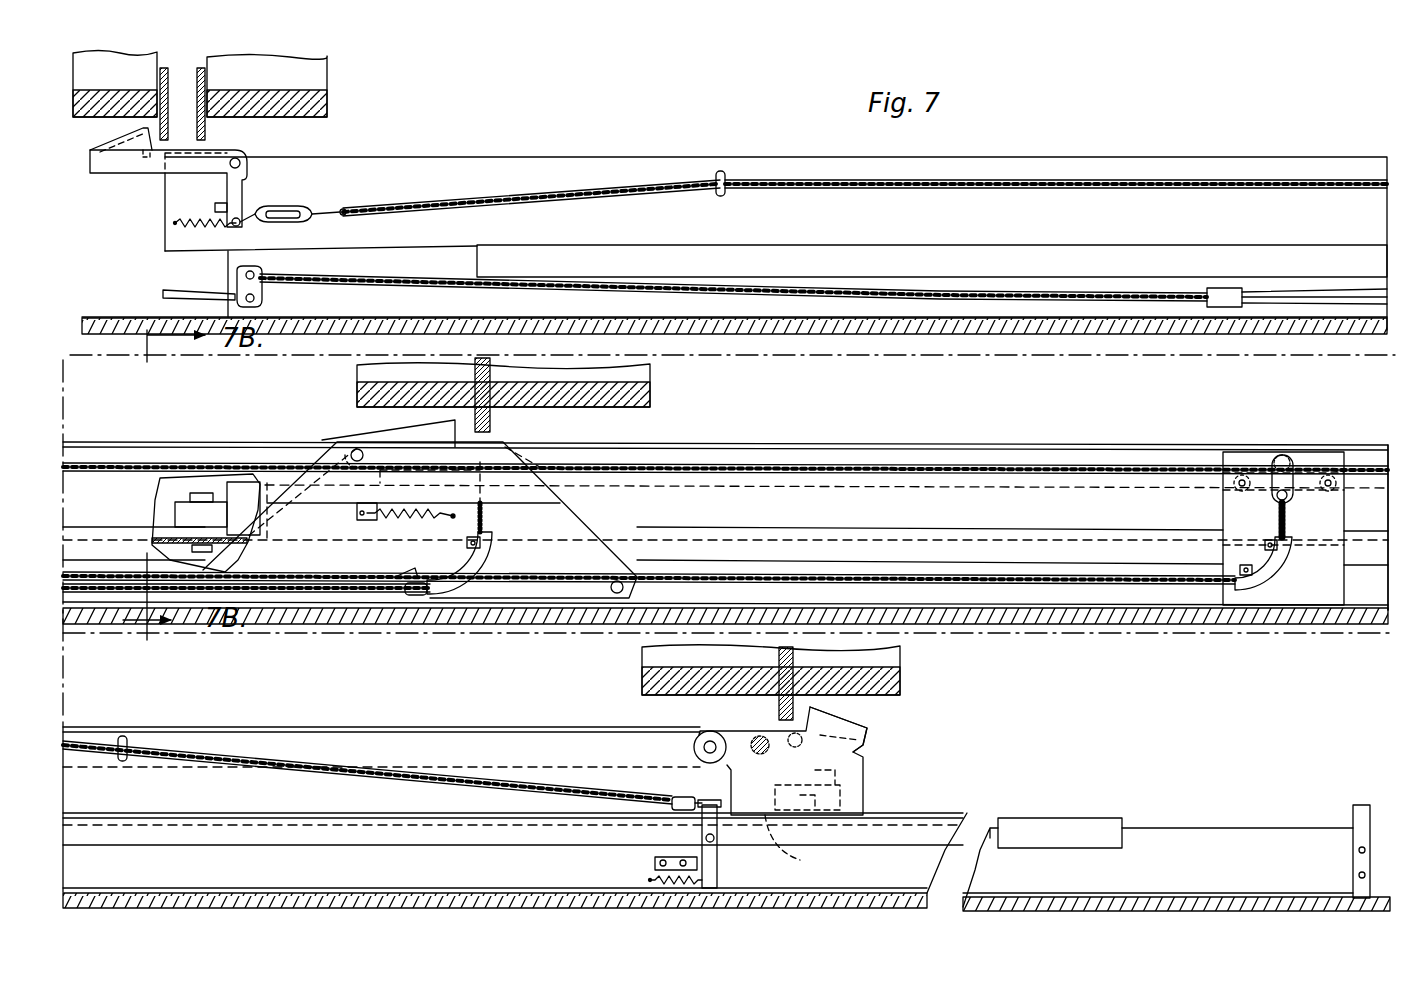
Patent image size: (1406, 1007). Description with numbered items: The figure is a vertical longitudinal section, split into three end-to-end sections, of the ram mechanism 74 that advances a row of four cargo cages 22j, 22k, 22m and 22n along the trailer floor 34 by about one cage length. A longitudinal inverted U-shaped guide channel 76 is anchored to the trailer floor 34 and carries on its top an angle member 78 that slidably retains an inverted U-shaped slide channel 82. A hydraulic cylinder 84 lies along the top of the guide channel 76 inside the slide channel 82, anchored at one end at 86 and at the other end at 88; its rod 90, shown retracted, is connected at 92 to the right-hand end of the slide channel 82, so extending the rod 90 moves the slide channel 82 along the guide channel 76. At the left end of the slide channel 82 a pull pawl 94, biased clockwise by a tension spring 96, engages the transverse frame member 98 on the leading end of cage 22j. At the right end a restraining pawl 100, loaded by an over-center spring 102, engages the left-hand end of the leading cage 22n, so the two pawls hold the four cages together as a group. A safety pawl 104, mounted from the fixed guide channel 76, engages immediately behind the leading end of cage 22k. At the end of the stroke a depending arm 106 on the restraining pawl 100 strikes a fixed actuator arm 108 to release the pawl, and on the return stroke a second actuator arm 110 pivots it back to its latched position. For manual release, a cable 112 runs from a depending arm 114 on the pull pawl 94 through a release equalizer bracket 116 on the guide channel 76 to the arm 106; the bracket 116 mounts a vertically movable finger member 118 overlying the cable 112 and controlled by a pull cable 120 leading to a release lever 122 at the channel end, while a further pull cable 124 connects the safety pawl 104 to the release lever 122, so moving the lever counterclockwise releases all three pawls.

The cargo cage 22j is at (115, 84).
The cargo cage 22k is at (313, 94).
The cargo cage 22m is at (613, 384).
The cargo cage 22n is at (870, 665).
The trailer floor 34 is at (800, 327).
The ram mechanism 74 is at (1080, 136).
The guide channel 76 is at (930, 315).
The angle member 78 is at (1010, 257).
The slide channel 82 is at (787, 150).
The cylinder 84 is at (245, 493).
The cylinder anchor 86 is at (187, 512).
The cylinder anchor 88 is at (747, 817).
The rod 90 is at (804, 848).
The rod connection 92 is at (858, 793).
The pull pawl 94 is at (115, 143).
The tension spring 96 is at (177, 224).
The transverse frame member 98 is at (170, 128).
The restraining pawl 100 is at (873, 711).
The over-center spring 102 is at (767, 728).
The safety pawl 104 is at (420, 427).
The depending arm 106 is at (690, 783).
The actuator arm 108 is at (1353, 814).
The actuator arm 110 is at (653, 847).
The cable 112 is at (451, 205).
The depending arm 114 is at (243, 195).
The release equalizer bracket 116 is at (1228, 508).
The finger member 118 is at (1297, 458).
The pull cable 120 is at (1185, 582).
The release lever 122 is at (163, 293).
The pull cable 124 is at (397, 592).